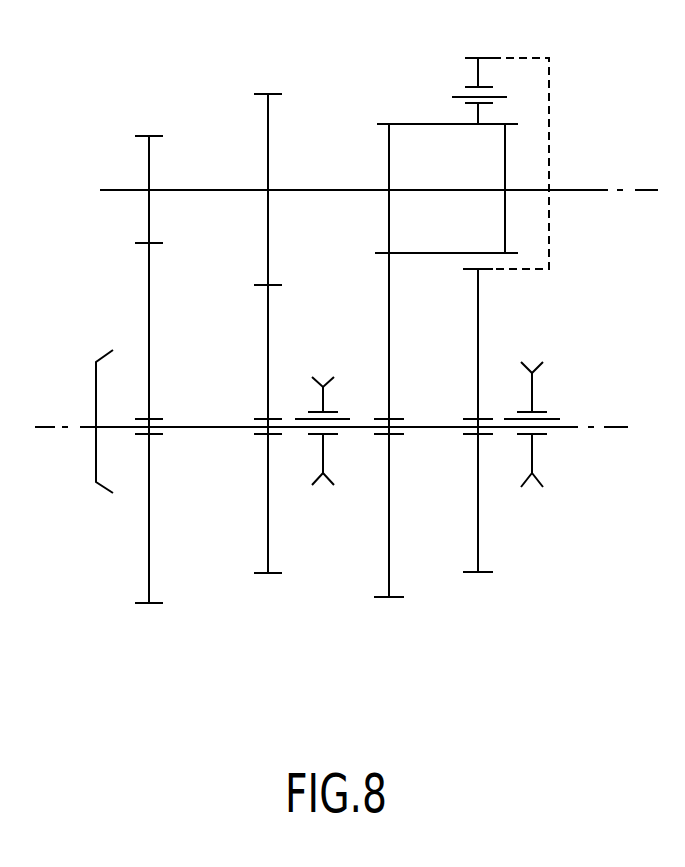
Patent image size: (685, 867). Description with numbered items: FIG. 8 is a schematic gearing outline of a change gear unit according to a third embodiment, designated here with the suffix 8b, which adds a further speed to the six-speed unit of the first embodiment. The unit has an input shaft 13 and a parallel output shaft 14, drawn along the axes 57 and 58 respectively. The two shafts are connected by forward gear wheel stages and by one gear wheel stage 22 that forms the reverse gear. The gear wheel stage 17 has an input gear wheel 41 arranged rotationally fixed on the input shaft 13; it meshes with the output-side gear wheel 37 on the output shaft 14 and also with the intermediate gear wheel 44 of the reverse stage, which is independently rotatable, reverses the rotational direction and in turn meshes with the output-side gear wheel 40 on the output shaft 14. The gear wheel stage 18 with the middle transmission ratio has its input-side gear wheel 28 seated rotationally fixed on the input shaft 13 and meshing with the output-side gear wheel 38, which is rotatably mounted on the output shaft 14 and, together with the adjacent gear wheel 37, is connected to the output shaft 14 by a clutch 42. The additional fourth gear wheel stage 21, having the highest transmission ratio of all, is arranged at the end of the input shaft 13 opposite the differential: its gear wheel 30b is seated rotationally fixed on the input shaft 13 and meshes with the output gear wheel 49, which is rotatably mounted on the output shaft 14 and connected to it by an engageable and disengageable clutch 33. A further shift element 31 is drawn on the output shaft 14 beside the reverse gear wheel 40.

The transmission 8b is at (99, 96).
The gear wheel 30b is at (148, 134).
The fourth gear wheel stage 21 is at (159, 99).
The axis 57 is at (124, 190).
The input-side gear wheel 28 is at (267, 143).
The gear wheel stage 18 is at (271, 86).
The gear wheel stage 17 is at (392, 119).
The input gear wheel 41 is at (455, 169).
The intermediate gear wheel 44 is at (488, 73).
The input shaft 13 is at (568, 185).
The clutch 33 is at (102, 344).
The axis 58 is at (53, 426).
The output shaft 14 is at (83, 435).
The clutch 42 is at (321, 492).
The synchronizer 31 is at (533, 494).
The output gear wheel 49 is at (153, 605).
The output-side gear wheel 38 is at (272, 575).
The output-side gear wheel 37 is at (390, 600).
The output-side gear wheel 40 is at (482, 575).
The gear wheel stage 22 is at (455, 650).